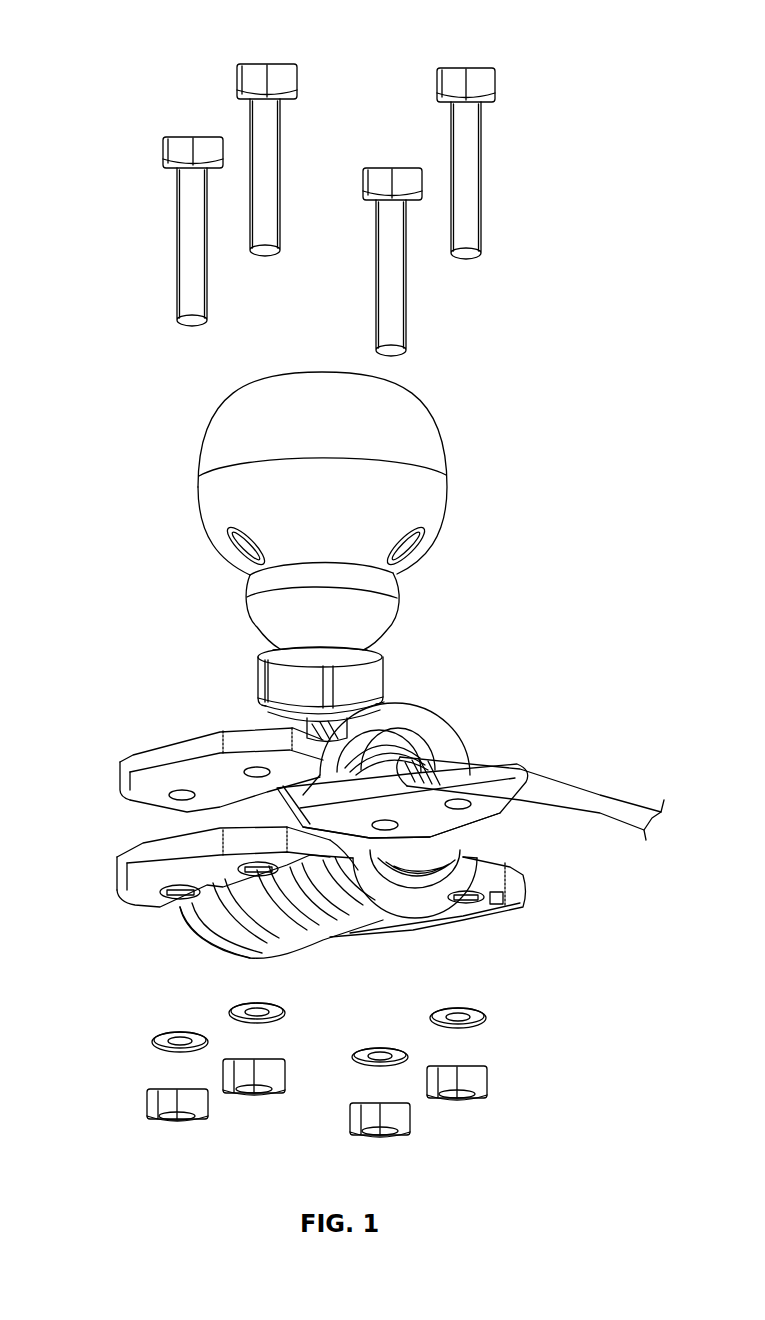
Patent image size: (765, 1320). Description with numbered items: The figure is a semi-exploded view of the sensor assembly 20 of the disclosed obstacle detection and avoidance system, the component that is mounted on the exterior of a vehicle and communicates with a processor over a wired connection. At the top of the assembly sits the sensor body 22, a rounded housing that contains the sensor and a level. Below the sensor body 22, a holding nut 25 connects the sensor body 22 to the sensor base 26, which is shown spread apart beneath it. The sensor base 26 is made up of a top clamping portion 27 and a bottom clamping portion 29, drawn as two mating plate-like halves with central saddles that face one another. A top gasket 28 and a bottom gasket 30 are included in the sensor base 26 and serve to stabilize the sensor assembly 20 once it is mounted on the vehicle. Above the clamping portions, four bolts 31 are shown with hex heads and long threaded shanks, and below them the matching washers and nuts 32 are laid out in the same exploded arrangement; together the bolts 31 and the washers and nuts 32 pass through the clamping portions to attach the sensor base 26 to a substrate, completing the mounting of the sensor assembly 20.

The sensor assembly 20 is at (494, 413).
The sensor body 22 is at (329, 421).
The holding nut 25 is at (382, 661).
The sensor base 26 is at (130, 832).
The top clamping portion 27 is at (432, 722).
The top gasket 28 is at (465, 752).
The bottom clamping portion 29 is at (524, 885).
The bottom gasket 30 is at (423, 847).
The bolts 31 is at (180, 136).
The washers and nuts 32 is at (216, 1030).